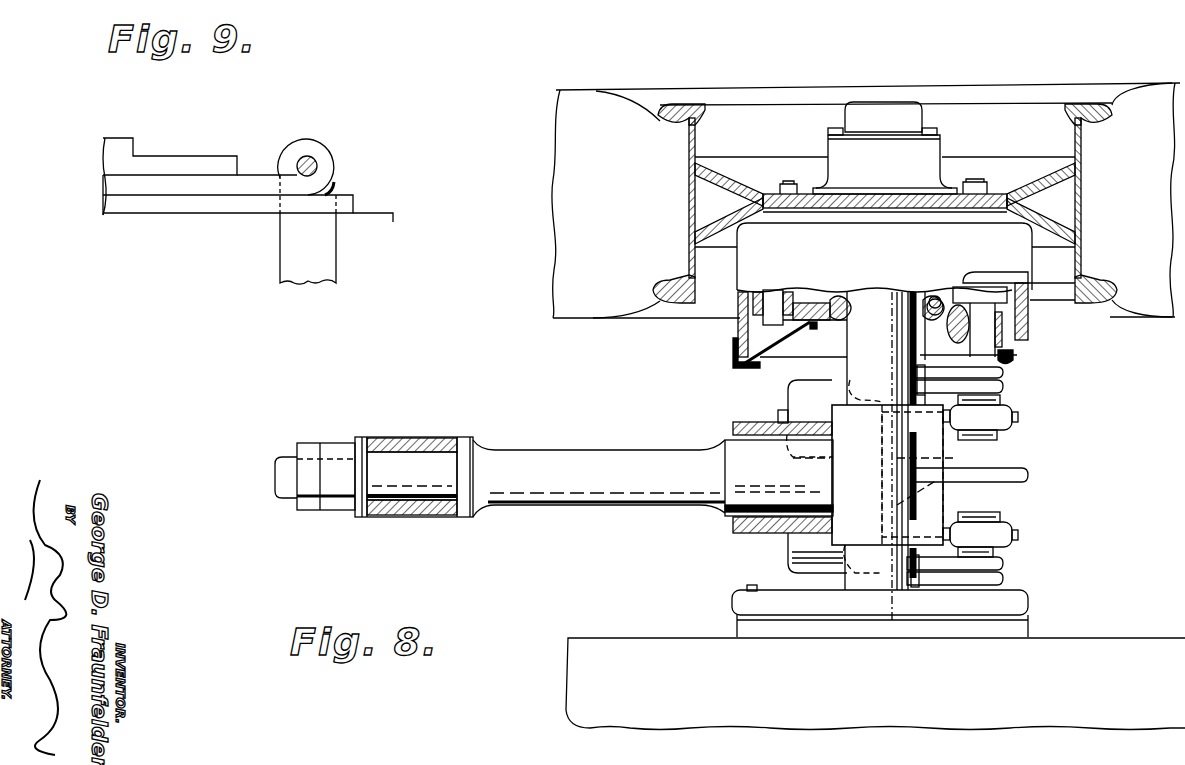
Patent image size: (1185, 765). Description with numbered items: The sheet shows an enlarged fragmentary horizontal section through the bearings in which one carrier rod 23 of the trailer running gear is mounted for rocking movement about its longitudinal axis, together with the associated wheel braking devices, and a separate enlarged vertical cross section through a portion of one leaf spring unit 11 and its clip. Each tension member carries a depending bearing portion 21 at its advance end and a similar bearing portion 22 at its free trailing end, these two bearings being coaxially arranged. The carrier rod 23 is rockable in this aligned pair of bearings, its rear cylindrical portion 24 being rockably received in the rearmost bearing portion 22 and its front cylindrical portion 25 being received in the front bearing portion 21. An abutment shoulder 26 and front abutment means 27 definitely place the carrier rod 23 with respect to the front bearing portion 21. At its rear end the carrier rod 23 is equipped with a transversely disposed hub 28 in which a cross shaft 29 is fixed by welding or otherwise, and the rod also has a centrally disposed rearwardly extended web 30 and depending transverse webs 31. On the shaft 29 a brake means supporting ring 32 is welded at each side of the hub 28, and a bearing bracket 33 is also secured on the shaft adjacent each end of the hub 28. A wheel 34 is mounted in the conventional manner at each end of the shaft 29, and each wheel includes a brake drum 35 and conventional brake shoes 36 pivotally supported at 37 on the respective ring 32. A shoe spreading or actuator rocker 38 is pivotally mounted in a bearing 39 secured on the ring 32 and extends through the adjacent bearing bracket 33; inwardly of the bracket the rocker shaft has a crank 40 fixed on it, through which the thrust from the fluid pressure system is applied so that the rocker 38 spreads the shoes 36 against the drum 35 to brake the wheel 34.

In FIG. 9, the leaf spring unit 11 is at (210, 160).
In FIG. 8, the bearing portion 21 is at (412, 437).
In FIG. 8, the bearing portion 22 is at (753, 533).
In FIG. 8, the carrier rod 23 is at (590, 496).
In FIG. 8, the rear cylindrical portion 24 is at (745, 490).
In FIG. 8, the front cylindrical portion 25 is at (403, 485).
In FIG. 8, the abutment shoulder 26 is at (465, 460).
In FIG. 8, the front abutment means 27 is at (335, 500).
In FIG. 8, the hub 28 is at (935, 512).
In FIG. 8, the cross shaft 29 is at (890, 295).
In FIG. 8, the web 30 is at (1030, 478).
In FIG. 8, the transverse webs 31 is at (953, 458).
In FIG. 8, the brake means supporting ring 32 is at (912, 341).
In FIG. 8, the bearing bracket 33 is at (995, 375).
In FIG. 8, the wheel 34 is at (648, 94).
In FIG. 8, the brake drum 35 is at (760, 273).
In FIG. 8, the brake shoes 36 is at (738, 322).
In FIG. 8, the pivot 37 is at (775, 318).
In FIG. 8, the rocker 38 is at (1005, 292).
In FIG. 8, the bearing 39 is at (1002, 328).
In FIG. 8, the crank 40 is at (1000, 420).